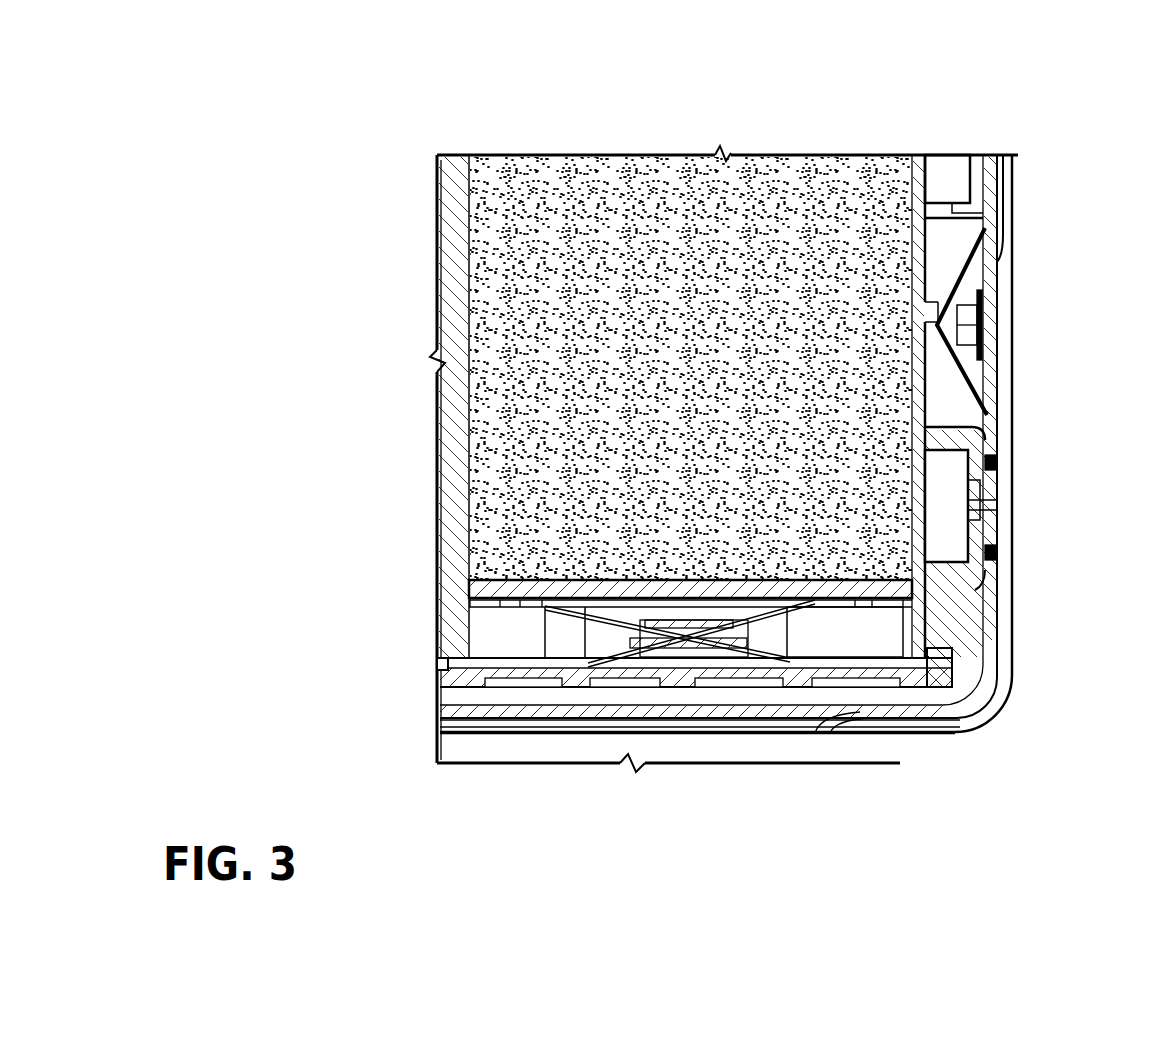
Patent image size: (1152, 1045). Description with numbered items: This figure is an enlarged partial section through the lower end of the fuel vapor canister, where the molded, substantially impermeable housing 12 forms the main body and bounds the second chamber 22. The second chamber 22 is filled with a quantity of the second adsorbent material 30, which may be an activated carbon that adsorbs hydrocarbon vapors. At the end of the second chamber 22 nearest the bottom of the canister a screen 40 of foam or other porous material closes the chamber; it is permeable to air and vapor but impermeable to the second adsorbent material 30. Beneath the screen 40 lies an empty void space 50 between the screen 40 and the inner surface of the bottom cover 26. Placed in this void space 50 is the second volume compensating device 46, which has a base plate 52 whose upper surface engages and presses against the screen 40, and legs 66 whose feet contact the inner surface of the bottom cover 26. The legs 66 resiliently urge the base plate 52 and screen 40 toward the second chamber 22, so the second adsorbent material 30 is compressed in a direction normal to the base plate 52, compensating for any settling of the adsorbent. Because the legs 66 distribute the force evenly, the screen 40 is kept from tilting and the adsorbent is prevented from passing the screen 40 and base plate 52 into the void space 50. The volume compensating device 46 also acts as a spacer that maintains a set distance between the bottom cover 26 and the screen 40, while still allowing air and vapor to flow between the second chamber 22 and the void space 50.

The housing 12 is at (927, 182).
The second adsorbent material 30 is at (857, 255).
The second chamber 22 is at (907, 405).
The screen 40 is at (893, 593).
The second volume compensating device 46 is at (493, 618).
The base plate 52 is at (537, 598).
The empty void space 50 is at (872, 635).
The legs 66 is at (636, 660).
The bottom cover 26 is at (917, 700).